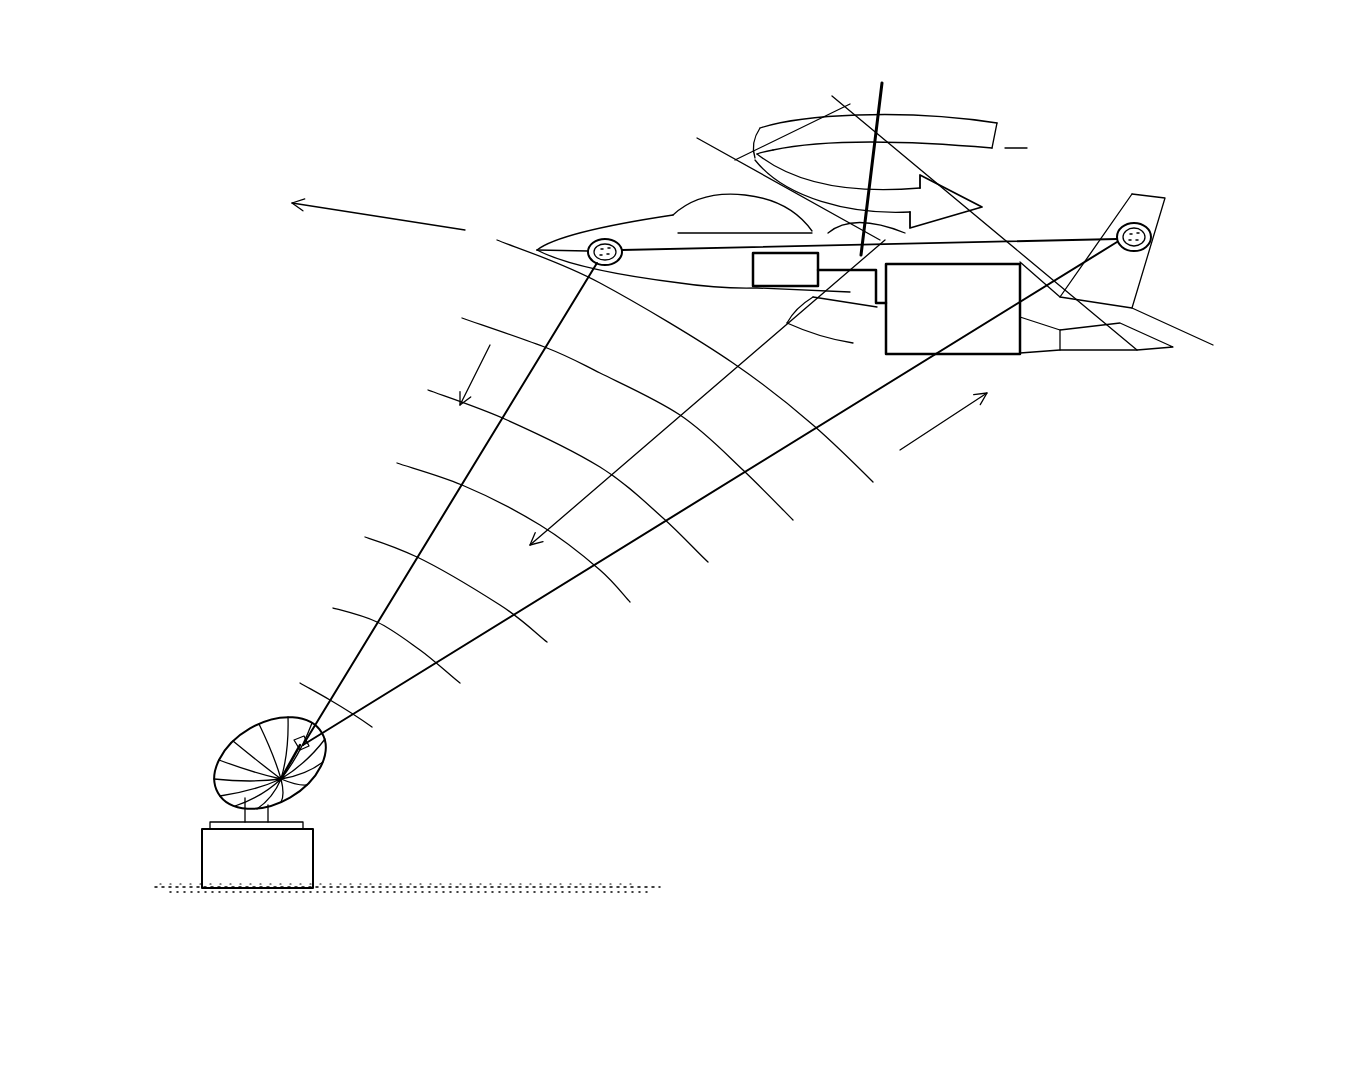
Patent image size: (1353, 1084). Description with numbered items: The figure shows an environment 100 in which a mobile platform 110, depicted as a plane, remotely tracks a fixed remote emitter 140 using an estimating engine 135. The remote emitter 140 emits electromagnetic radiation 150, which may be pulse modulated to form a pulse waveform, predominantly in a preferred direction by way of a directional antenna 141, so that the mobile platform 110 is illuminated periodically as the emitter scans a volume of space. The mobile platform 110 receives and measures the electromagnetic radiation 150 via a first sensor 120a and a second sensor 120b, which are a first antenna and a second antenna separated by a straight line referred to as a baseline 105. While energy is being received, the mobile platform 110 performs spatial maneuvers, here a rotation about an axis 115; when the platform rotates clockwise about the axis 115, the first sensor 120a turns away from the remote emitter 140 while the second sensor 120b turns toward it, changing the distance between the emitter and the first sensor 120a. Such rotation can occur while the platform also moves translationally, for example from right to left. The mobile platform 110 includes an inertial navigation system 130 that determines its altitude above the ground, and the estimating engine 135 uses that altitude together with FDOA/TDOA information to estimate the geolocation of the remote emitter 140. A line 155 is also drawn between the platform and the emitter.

The environment 100 is at (175, 118).
The baseline 105 is at (655, 250).
The mobile platform 110 is at (1215, 345).
The axis 115 is at (887, 96).
The first sensor 120a is at (581, 240).
The second sensor 120b is at (1147, 216).
The inertial navigation system 130 is at (765, 282).
The estimating engine 135 is at (933, 348).
The remote emitter 140 is at (314, 848).
The directional antenna 141 is at (318, 758).
The electromagnetic radiation 150 is at (749, 560).
The line of sight 155 is at (707, 392).